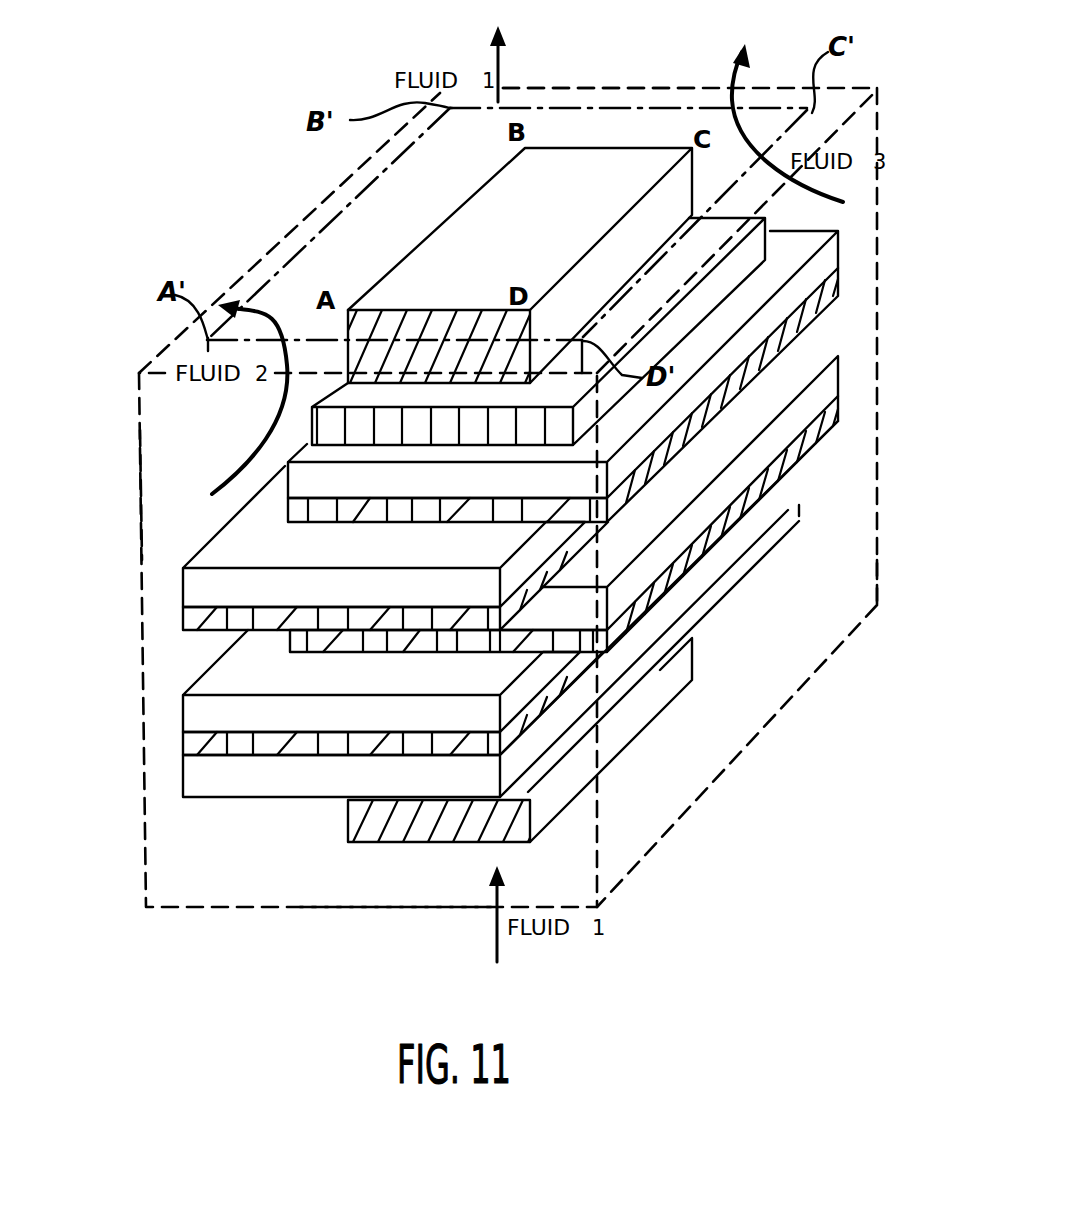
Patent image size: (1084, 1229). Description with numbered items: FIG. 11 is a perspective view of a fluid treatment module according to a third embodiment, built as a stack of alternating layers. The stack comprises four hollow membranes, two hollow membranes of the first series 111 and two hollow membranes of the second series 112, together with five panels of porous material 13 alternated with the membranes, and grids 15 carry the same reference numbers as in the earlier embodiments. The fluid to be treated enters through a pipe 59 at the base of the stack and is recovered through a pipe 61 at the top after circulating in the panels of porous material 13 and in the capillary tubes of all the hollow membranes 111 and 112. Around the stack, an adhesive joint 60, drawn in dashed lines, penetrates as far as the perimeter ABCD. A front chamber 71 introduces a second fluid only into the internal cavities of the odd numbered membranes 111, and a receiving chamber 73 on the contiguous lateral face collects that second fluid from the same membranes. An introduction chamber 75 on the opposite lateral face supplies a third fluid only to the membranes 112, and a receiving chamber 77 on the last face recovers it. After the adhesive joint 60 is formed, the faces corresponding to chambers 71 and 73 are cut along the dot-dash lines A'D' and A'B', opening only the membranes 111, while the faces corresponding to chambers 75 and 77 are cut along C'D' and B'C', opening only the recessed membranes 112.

The adhesive joint 60 is at (735, 763).
The pipe 61 is at (450, 215).
The pipe 59 is at (335, 832).
The grid 15 is at (720, 216).
The panel of porous material 13 is at (830, 254).
The hollow membrane of the first series 111 is at (195, 620).
The hollow membrane of the second series 112 is at (823, 302).
The front chamber 71 is at (407, 895).
The receiving chamber 73 is at (215, 490).
The introduction chamber 75 is at (765, 608).
The receiving chamber 77 is at (622, 112).